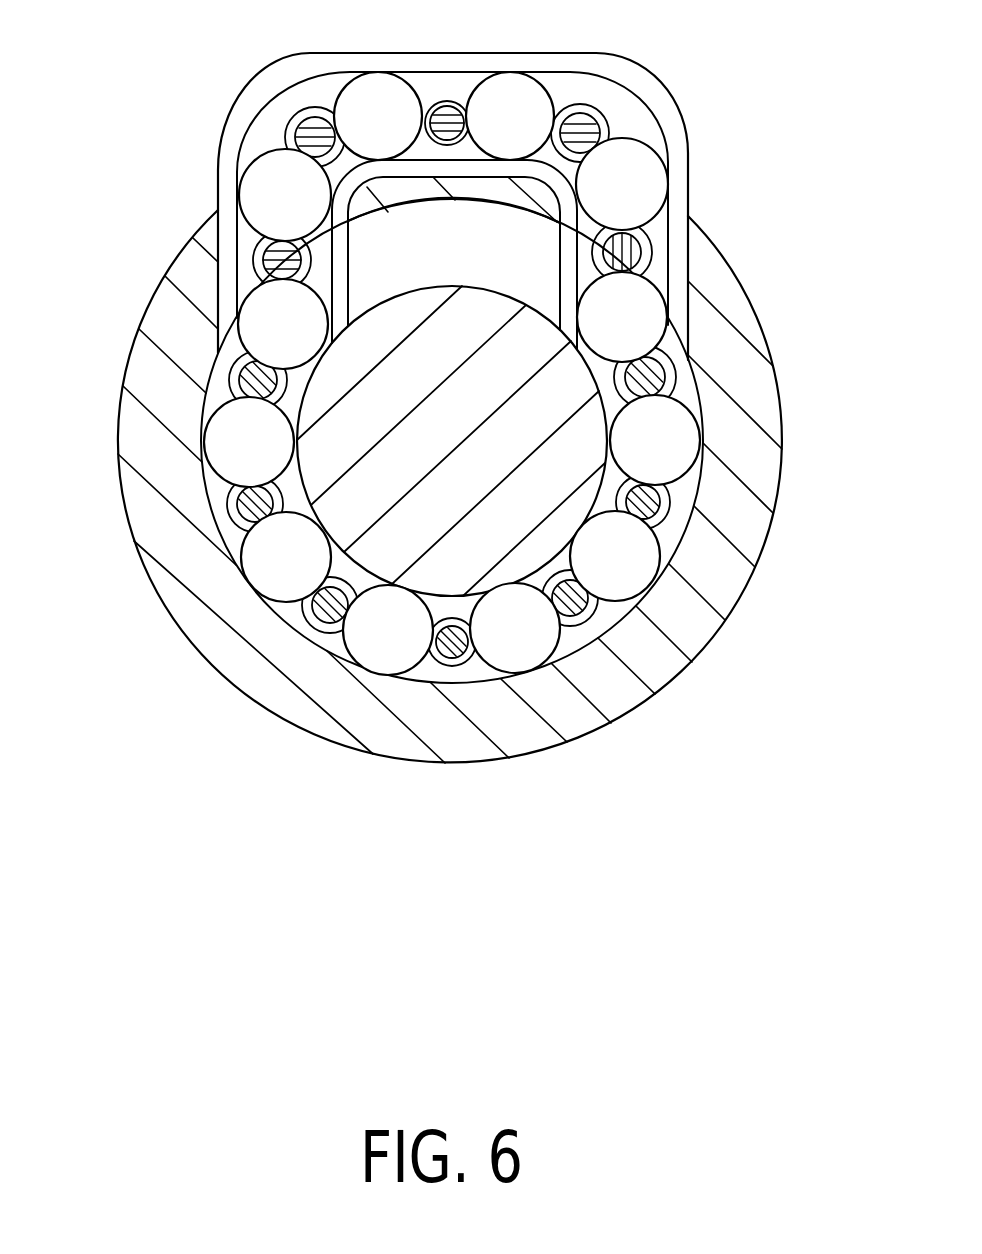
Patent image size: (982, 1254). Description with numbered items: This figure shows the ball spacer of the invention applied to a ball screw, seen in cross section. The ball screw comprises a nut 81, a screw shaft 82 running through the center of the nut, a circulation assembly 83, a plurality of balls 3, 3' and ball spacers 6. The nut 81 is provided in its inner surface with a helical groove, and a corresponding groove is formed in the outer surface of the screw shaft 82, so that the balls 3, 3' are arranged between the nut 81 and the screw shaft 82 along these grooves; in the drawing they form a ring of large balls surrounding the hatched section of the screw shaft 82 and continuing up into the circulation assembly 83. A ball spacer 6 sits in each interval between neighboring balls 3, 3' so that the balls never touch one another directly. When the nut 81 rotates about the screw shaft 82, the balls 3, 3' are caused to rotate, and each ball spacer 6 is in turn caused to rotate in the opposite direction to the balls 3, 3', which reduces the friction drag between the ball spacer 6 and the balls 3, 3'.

The nut 81 is at (182, 556).
The screw shaft 82 is at (387, 552).
The circulation assembly 83 is at (232, 300).
The ball 3 is at (737, 457).
The ball 3' is at (713, 290).
The ball spacer 6 is at (677, 375).